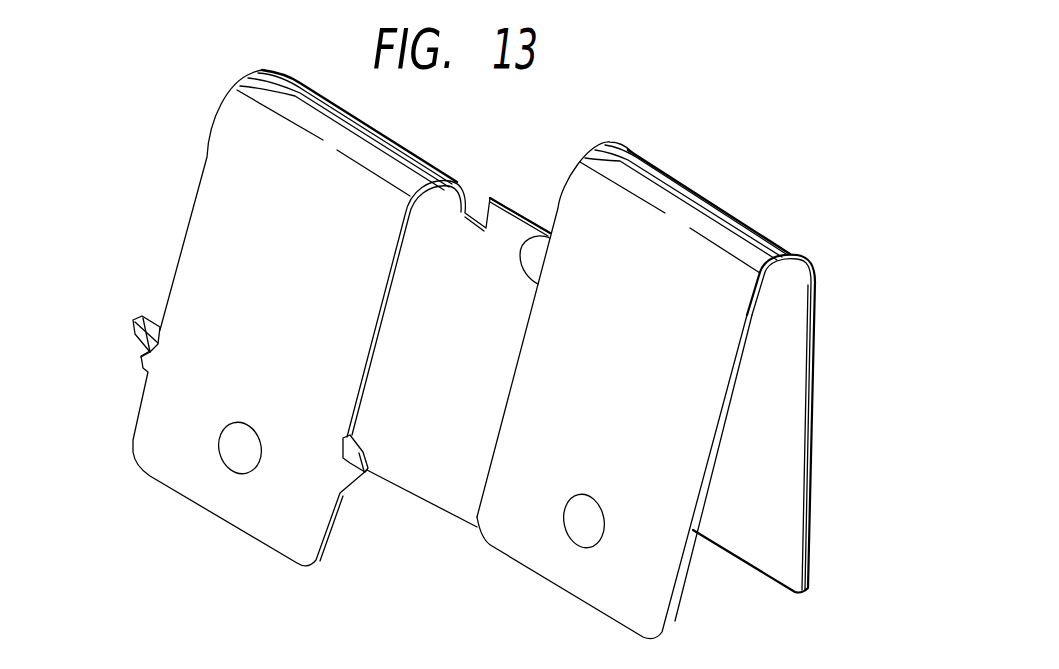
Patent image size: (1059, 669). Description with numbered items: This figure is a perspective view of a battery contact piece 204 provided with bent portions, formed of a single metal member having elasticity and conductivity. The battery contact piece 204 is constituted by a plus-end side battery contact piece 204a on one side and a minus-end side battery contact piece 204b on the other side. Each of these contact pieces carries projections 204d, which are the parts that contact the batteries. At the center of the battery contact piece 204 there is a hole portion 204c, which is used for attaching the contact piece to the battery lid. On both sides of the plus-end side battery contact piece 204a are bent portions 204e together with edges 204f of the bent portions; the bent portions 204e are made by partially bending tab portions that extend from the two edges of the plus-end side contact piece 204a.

The battery contact piece 204 is at (422, 473).
The plus-end side battery contact piece 204a is at (218, 168).
The minus-end side battery contact piece 204b is at (667, 237).
The hole portion 204c is at (532, 247).
The projections 204d is at (228, 453).
The bent portions 204e is at (140, 318).
The edges of the bent portions 204f is at (142, 355).